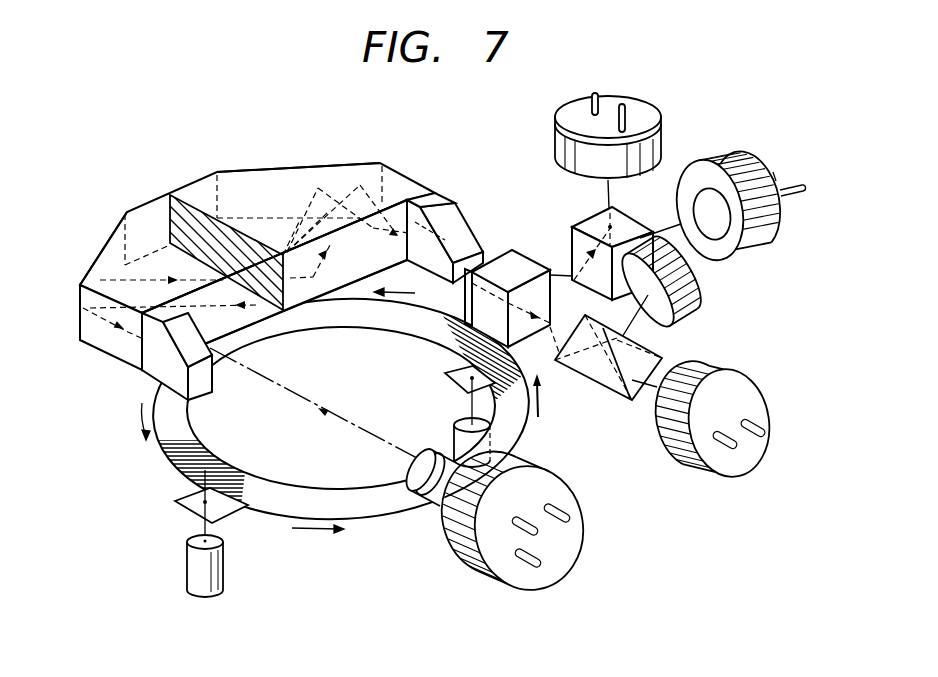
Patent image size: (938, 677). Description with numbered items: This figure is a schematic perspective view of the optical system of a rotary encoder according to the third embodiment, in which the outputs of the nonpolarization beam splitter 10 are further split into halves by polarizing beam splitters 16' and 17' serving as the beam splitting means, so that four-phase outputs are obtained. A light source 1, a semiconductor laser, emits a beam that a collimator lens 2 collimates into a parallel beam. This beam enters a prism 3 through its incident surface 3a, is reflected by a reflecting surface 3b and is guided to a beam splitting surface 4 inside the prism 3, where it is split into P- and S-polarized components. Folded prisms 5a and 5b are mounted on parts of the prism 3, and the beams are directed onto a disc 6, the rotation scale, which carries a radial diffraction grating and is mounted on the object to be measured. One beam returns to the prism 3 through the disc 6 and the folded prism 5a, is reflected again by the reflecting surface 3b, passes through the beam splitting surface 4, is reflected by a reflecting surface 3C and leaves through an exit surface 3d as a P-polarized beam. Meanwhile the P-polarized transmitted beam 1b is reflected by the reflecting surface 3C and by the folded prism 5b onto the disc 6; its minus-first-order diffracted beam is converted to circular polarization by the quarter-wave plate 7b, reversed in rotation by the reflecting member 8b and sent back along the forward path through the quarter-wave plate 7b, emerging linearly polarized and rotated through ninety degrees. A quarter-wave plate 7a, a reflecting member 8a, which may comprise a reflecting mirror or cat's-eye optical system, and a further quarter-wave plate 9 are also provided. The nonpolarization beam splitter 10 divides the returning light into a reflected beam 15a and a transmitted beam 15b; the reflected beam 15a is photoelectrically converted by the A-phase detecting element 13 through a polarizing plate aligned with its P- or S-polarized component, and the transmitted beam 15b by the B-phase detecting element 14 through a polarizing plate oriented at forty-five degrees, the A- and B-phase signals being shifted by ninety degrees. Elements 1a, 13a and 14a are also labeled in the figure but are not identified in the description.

The light source 1 is at (509, 525).
The deflecting mirror 1a is at (304, 393).
The P-polarized transmitted beam 1b is at (333, 249).
The collimator lens 2 is at (423, 498).
The prism 3 is at (146, 147).
The incident surface 3a is at (249, 349).
The reflecting surface 3b is at (81, 248).
The reflecting surface 3C is at (298, 155).
The exit surface 3d is at (345, 318).
The beam splitting surface 4 is at (197, 195).
The folded prism 5a is at (153, 360).
The folded prism 5b is at (445, 224).
The disc 6 is at (330, 410).
The λ/4 plate 7a is at (183, 505).
The λ/4 plate 7b is at (440, 384).
The reflecting member 8a is at (175, 568).
The reflecting member 8b is at (440, 442).
The λ/4 plate 9 is at (503, 250).
The nonpolarization beam splitter 10 is at (523, 263).
The A-phase detecting element 13 is at (736, 225).
The receiver housing 13a is at (643, 129).
The B-phase detecting element 14 is at (722, 415).
The lens 14a is at (694, 289).
The reflected beam 15a is at (559, 235).
The transmitted beam 15b is at (560, 395).
The polarizing beam splitter 16' is at (638, 357).
The polarizing beam splitter 17' is at (639, 237).